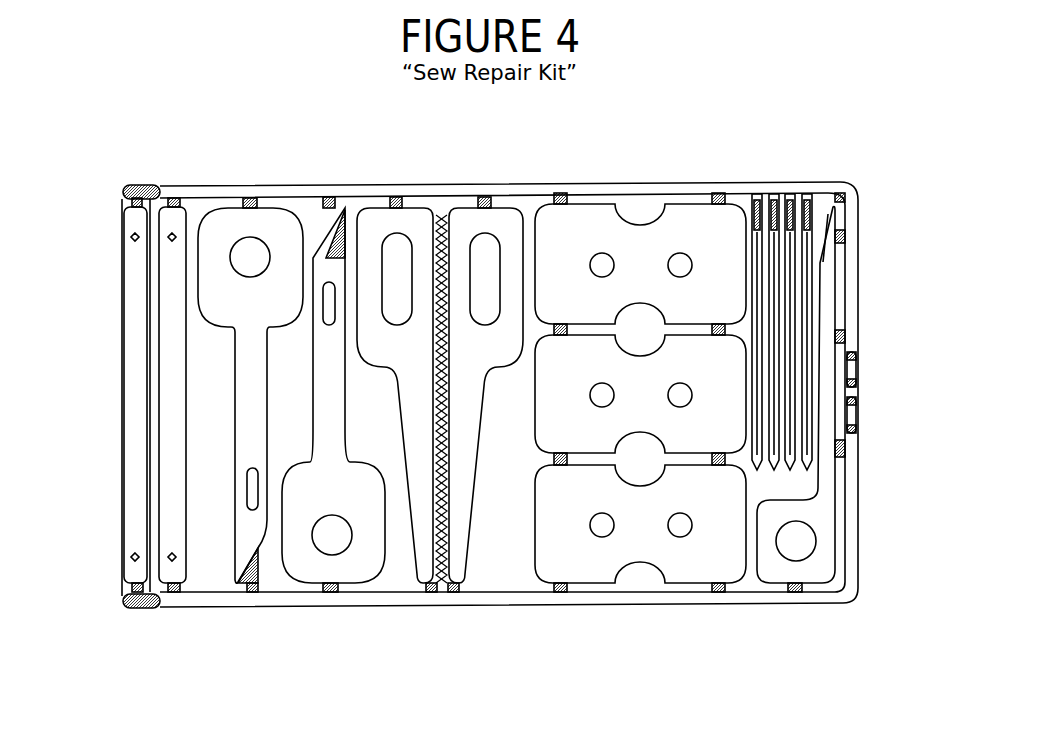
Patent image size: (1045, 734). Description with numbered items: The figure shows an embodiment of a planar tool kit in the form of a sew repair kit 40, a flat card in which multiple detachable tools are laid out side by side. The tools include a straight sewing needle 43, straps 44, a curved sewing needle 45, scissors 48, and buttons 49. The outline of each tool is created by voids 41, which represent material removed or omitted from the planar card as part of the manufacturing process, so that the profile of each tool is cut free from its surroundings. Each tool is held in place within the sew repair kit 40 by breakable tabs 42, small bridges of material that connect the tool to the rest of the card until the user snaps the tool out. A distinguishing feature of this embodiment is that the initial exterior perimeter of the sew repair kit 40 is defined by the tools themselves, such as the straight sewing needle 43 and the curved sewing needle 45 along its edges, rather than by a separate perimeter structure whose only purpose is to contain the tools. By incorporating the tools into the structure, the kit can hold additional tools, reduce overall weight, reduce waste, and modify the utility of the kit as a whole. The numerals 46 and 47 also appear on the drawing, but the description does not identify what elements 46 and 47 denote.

The sew repair kit 40 is at (820, 94).
The voids 41 is at (393, 578).
The breakable tabs 42 is at (724, 591).
The straight sewing needle 43 is at (200, 600).
The straps 44 is at (137, 478).
The curved sewing needle 45 is at (850, 190).
The needles 46 is at (800, 204).
The thimble / needle holder 47 is at (821, 504).
The scissors 48 is at (413, 222).
The buttons 49 is at (610, 222).